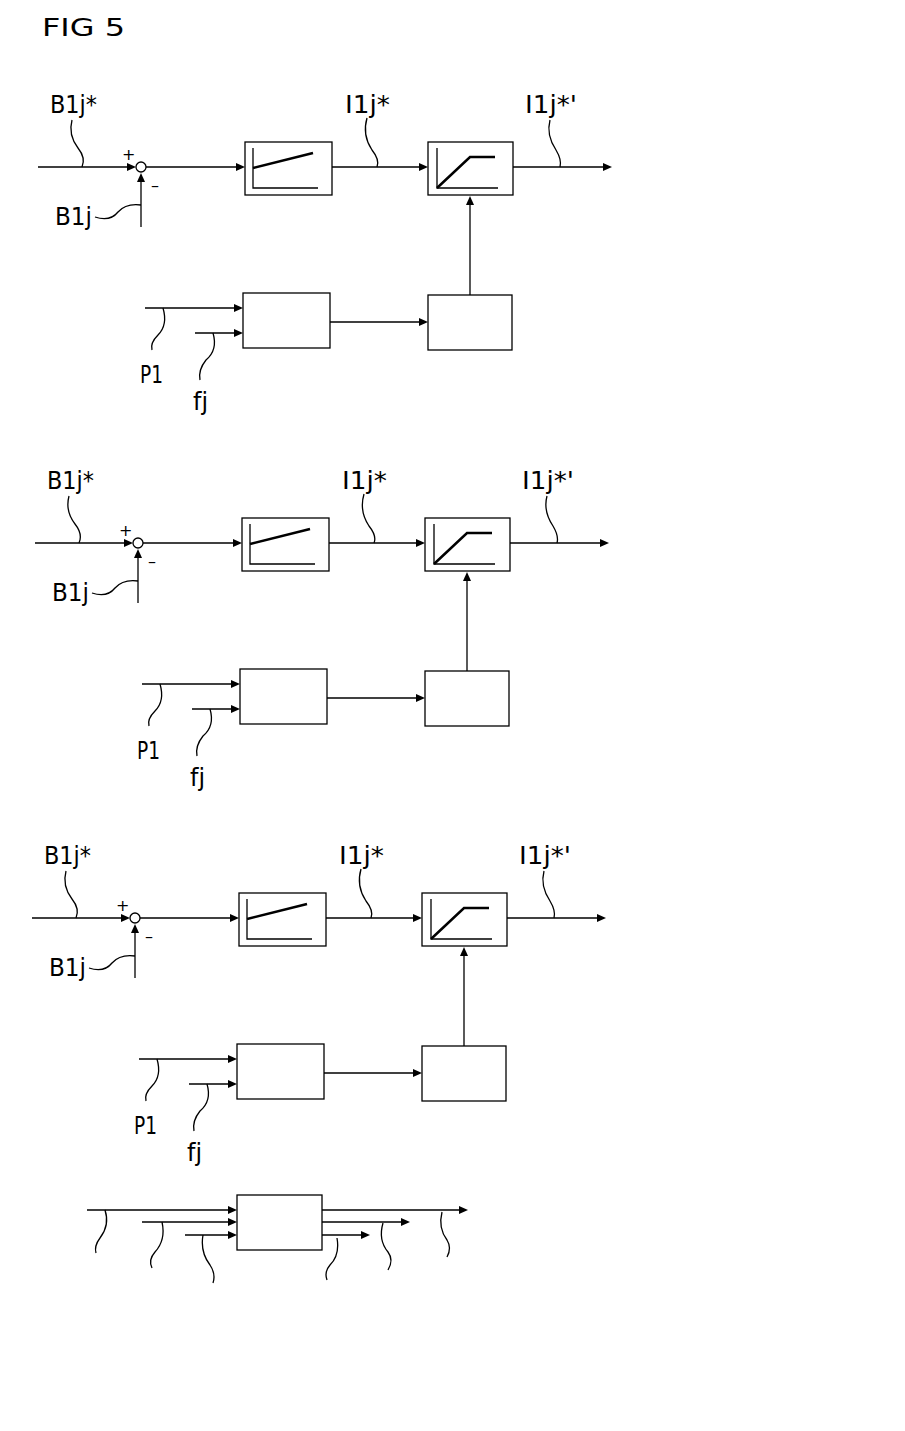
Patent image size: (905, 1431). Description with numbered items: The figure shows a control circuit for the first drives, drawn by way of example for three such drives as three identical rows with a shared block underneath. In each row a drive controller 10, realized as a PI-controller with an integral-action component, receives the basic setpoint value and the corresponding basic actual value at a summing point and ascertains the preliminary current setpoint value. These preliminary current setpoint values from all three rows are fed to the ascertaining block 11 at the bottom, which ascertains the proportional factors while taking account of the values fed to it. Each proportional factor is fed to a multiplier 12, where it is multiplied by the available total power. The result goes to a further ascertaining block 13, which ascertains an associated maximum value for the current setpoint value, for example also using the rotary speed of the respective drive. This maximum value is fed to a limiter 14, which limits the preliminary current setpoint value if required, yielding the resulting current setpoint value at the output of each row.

The drive controller 10 is at (288, 141).
The ascertaining block 11 is at (278, 1252).
The multiplier 12 is at (287, 350).
The ascertaining block 13 is at (470, 350).
The limiter 14 is at (471, 141).